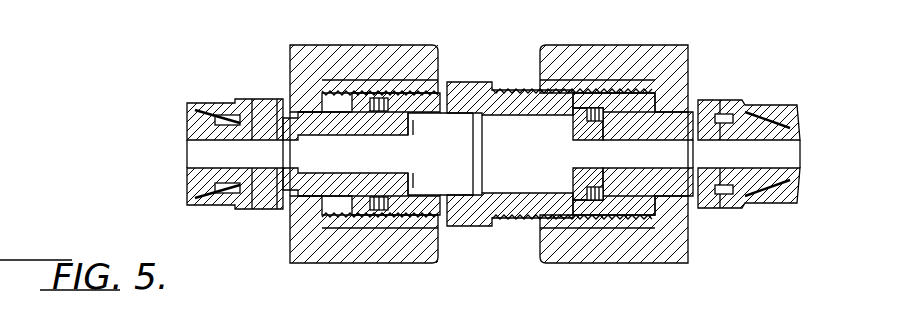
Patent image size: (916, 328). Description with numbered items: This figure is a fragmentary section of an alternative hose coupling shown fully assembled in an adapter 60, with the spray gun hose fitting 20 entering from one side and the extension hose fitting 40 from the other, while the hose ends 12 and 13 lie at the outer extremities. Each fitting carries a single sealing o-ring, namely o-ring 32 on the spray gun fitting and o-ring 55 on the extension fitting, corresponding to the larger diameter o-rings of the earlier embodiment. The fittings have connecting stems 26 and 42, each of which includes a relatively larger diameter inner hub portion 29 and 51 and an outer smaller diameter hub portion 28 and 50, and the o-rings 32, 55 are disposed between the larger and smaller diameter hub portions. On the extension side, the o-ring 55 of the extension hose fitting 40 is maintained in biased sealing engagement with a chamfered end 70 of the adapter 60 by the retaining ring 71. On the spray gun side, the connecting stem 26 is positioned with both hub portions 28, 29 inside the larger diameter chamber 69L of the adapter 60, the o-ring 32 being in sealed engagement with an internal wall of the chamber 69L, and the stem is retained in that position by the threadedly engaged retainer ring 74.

The first tube end fitting 12 is at (187, 124).
The second tube end fitting 13 is at (800, 124).
The spray gun hose fitting 20 is at (297, 104).
The connecting stem 26 is at (310, 197).
The outer smaller diameter hub portion 28 is at (406, 224).
The inner hub portion 29 is at (372, 208).
The sealing o-ring 32 is at (378, 212).
The extension hose fitting 40 is at (690, 93).
The connecting stem 42 is at (683, 217).
The outer smaller diameter hub portion 50 is at (548, 203).
The inner hub portion 51 is at (612, 206).
The sealing o-ring 55 is at (600, 202).
The adapter 60 is at (490, 79).
The larger diameter chamber 69L is at (432, 185).
The chamfered end 70 is at (598, 166).
The retaining ring 71 is at (683, 248).
The retainer ring 74 is at (304, 62).